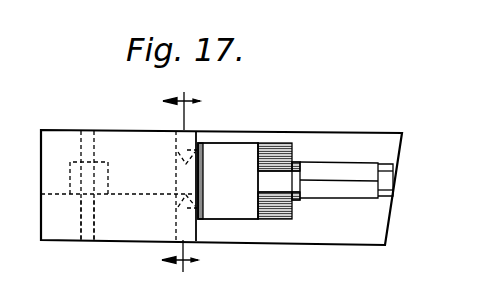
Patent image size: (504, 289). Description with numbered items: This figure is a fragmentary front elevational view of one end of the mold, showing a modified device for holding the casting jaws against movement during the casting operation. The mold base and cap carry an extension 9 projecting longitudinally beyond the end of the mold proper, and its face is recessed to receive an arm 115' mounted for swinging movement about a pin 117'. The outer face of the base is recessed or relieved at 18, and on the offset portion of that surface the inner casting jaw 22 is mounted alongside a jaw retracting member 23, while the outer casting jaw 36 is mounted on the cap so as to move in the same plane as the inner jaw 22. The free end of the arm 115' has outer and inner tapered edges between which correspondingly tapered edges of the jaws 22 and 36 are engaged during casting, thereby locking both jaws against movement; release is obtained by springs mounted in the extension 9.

The extension 9 is at (41, 212).
The recessed surface 18 is at (181, 182).
The jaw retracting member 23 is at (217, 150).
The outer casting jaw 36 is at (312, 142).
The inner casting jaw 22 is at (332, 227).
The pin 117' is at (67, 236).
The arm 115' is at (110, 236).